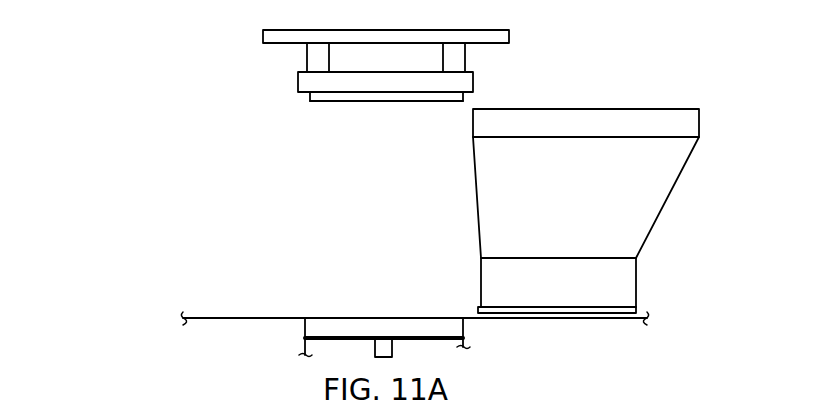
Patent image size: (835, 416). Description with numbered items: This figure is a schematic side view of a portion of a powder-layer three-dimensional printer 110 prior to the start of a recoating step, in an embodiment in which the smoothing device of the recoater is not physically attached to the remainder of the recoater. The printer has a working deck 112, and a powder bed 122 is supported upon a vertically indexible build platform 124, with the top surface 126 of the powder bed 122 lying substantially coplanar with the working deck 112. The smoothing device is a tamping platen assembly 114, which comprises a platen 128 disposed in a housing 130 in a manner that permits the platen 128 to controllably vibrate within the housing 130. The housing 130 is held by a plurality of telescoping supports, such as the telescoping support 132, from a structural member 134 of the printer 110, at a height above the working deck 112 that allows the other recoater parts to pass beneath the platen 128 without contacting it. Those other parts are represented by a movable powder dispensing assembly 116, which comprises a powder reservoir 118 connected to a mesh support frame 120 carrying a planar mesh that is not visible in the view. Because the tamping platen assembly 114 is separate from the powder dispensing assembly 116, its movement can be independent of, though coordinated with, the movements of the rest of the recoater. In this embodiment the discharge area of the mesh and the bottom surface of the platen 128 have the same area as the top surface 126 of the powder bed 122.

The powder-layer three-dimensional printer 110 is at (145, 75).
The working deck 112 is at (230, 317).
The tamping platen assembly 114 is at (298, 87).
The movable powder dispensing assembly 116 is at (665, 108).
The powder reservoir 118 is at (655, 182).
The mesh support frame 120 is at (636, 309).
The powder bed 122 is at (328, 327).
The build platform 124 is at (437, 340).
The top surface 126 is at (378, 317).
The platen 128 is at (367, 97).
The housing 130 is at (320, 85).
The telescoping support 132 is at (458, 58).
The structural member 134 is at (285, 38).